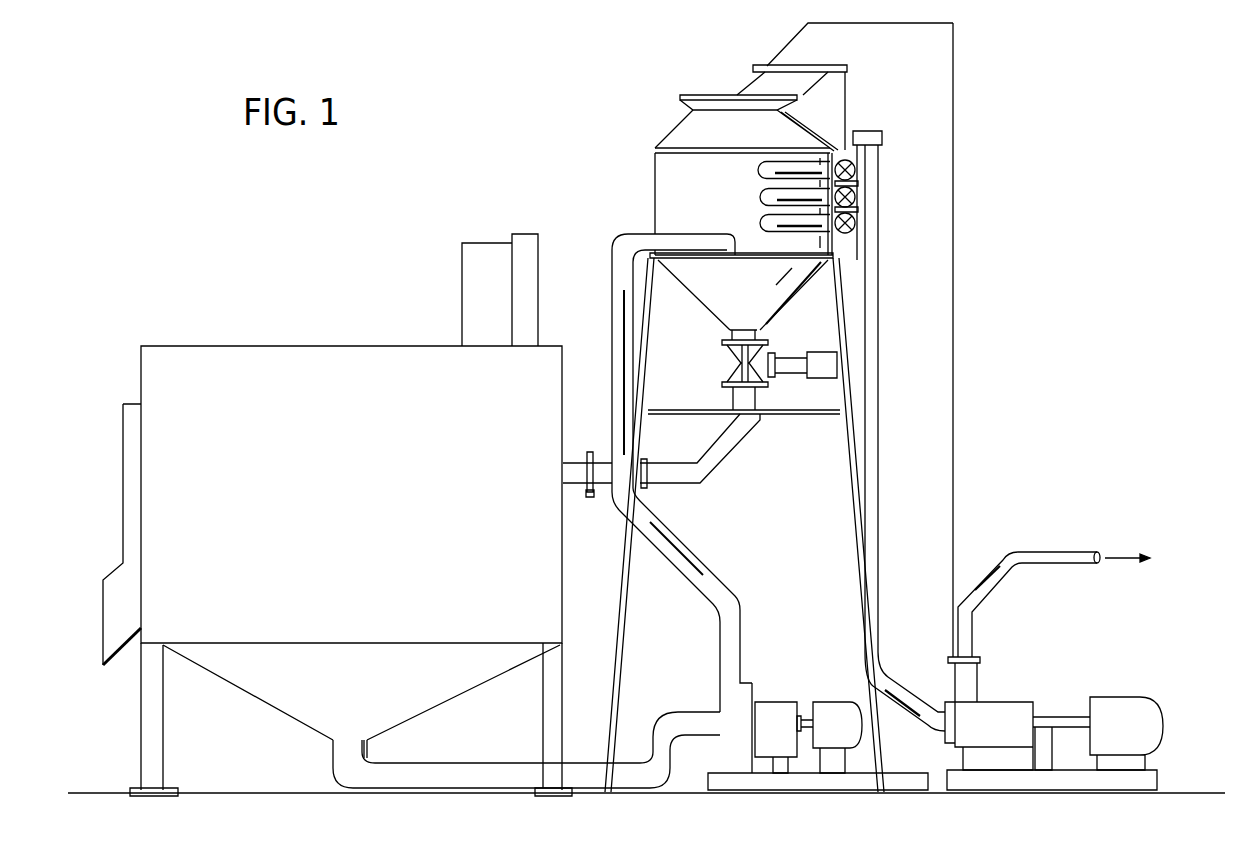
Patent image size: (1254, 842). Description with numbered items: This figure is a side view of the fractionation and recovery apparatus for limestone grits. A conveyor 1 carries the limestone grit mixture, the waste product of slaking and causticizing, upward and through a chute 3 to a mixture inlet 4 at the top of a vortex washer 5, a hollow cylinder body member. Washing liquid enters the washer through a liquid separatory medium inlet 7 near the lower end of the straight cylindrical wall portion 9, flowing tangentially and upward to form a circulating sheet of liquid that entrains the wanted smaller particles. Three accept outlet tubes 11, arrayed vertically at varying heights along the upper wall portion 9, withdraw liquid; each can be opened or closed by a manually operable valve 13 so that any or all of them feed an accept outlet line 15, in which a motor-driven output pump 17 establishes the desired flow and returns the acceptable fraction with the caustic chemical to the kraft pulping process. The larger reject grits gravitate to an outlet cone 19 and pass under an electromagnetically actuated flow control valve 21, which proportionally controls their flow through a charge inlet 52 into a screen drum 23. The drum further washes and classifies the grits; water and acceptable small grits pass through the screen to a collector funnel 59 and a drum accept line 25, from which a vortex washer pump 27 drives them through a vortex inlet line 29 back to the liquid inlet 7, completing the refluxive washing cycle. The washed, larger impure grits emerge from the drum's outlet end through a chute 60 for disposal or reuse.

The conveyor 1 is at (958, 321).
The chute 3 is at (773, 55).
The mixture inlet 4 is at (683, 96).
The vortex washer 5 is at (661, 129).
The liquid separatory medium inlet 7 is at (725, 234).
The straight cylindrical wall portion 9 is at (700, 189).
The accept outlet tubes 11 is at (760, 223).
The manually operable valve 13 is at (857, 224).
The accept outlet line 15 is at (880, 383).
The motor-driven output pump 17 is at (1010, 700).
The outlet cone 19 is at (748, 296).
The electromagnetically actuated flow control valve 21 is at (722, 362).
The screen drum 23 is at (305, 347).
The drum accept line 25 is at (476, 764).
The vortex washer pump 27 is at (778, 700).
The vortex inlet line 29 is at (612, 424).
The charge inlet 52 is at (570, 487).
The collector funnel 59 is at (284, 712).
The chute 60 is at (110, 572).